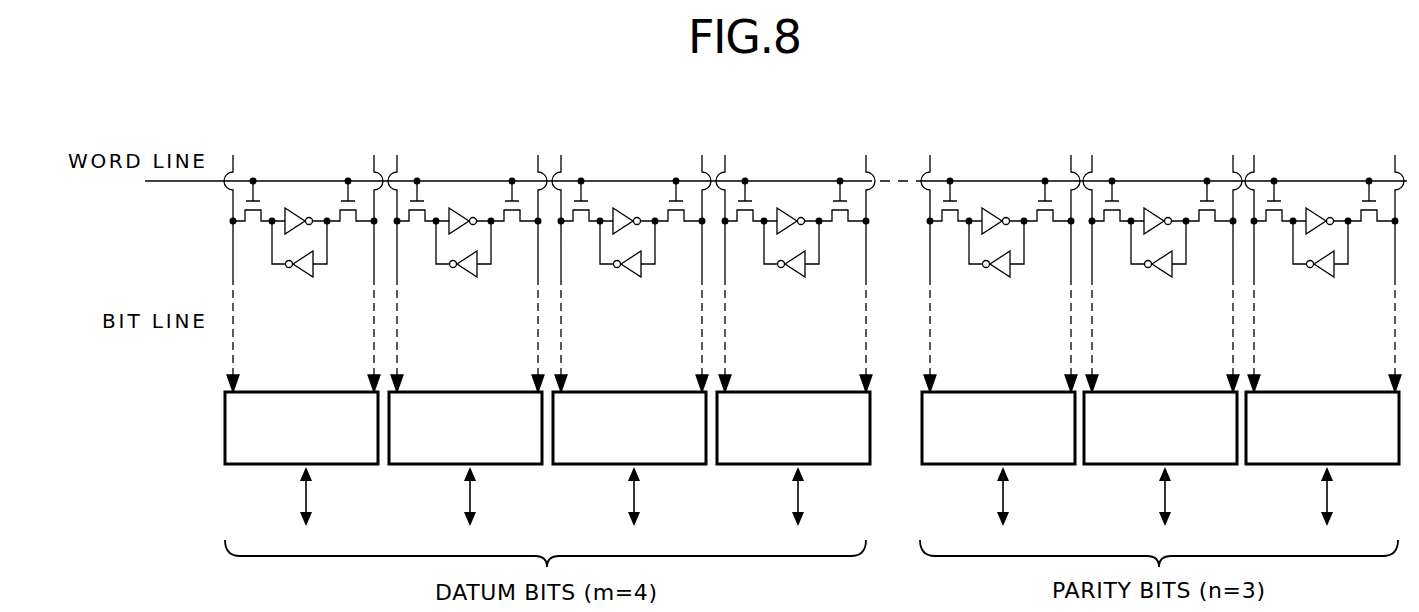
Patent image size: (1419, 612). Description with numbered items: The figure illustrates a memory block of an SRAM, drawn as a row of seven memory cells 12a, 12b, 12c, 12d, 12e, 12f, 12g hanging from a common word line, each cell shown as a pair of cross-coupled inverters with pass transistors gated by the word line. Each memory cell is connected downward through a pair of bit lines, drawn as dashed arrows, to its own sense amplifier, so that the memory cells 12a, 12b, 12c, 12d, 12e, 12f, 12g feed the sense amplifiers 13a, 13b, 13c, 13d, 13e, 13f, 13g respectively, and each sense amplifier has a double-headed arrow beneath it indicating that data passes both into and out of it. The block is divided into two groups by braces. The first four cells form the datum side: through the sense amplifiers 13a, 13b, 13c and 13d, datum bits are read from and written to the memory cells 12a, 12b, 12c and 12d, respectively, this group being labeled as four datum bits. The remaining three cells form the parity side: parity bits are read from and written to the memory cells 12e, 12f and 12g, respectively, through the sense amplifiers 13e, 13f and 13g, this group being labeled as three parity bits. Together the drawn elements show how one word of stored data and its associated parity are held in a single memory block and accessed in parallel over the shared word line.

The memory cell 12a is at (302, 171).
The memory cell 12b is at (466, 171).
The memory cell 12c is at (630, 171).
The memory cell 12d is at (794, 171).
The memory cell 12e is at (999, 171).
The memory cell 12f is at (1161, 171).
The memory cell 12g is at (1323, 171).
The sense amplifier 13a is at (302, 392).
The sense amplifier 13b is at (466, 392).
The sense amplifier 13c is at (630, 392).
The sense amplifier 13d is at (794, 392).
The sense amplifier 13e is at (999, 392).
The sense amplifier 13f is at (1161, 392).
The sense amplifier 13g is at (1323, 392).